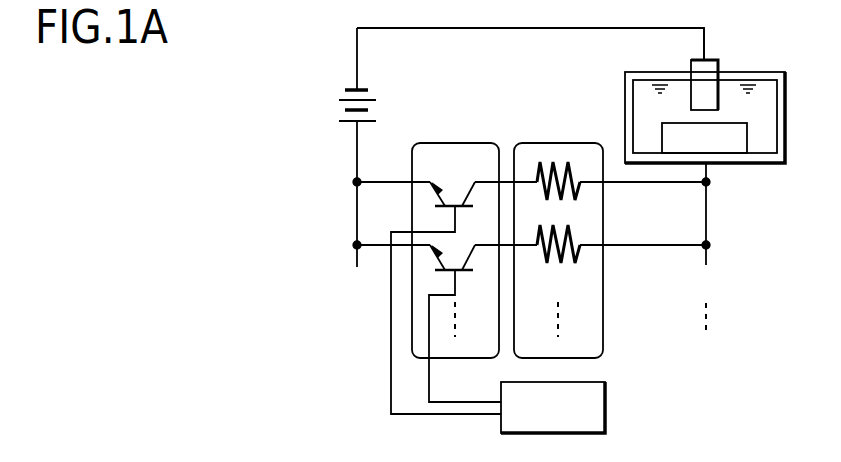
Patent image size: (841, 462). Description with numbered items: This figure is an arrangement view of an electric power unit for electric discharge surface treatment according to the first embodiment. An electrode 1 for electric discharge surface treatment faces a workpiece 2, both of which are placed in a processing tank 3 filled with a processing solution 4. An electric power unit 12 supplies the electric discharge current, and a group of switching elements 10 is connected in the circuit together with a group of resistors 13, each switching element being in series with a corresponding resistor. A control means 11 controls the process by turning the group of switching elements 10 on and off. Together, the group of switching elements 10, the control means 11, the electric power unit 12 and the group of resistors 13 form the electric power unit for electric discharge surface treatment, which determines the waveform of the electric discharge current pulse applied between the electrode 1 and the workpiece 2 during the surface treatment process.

The electrode for electric discharge surface treatment 1 is at (712, 60).
The workpiece 2 is at (727, 145).
The processing tank 3 is at (625, 100).
The processing solution 4 is at (675, 85).
The group of switching elements 10 is at (412, 212).
The control means 11 is at (606, 402).
The electric power unit 12 is at (340, 113).
The group of resistors 13 is at (603, 290).